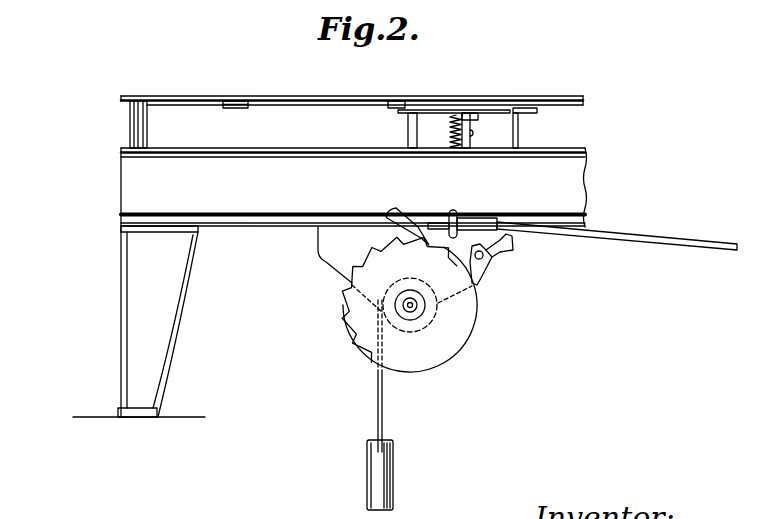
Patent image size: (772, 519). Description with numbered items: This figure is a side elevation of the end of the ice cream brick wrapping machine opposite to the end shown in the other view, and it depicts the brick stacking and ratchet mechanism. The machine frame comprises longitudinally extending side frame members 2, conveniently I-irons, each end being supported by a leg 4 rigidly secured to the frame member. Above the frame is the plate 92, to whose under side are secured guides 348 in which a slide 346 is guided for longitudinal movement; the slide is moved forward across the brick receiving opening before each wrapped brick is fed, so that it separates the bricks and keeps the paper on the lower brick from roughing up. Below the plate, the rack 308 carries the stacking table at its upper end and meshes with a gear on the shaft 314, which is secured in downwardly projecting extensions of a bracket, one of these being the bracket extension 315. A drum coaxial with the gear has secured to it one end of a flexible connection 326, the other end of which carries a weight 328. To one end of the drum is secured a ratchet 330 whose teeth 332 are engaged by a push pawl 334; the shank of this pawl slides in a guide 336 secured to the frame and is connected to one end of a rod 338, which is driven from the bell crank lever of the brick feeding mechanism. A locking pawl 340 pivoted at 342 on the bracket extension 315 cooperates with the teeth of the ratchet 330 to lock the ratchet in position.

The side frame member 2 is at (128, 187).
The leg 4 is at (122, 356).
The plate 92 is at (302, 100).
The rack 308 is at (449, 117).
The shaft 314 is at (413, 306).
The bracket extension 315 is at (335, 265).
The flexible connection 326 is at (384, 415).
The weight 328 is at (394, 465).
The ratchet 330 is at (448, 357).
The ratchet teeth 332 is at (352, 332).
The push pawl 334 is at (425, 222).
The guide 336 is at (458, 211).
The rod 338 is at (673, 243).
The locking pawl 340 is at (514, 253).
The pivot 342 is at (486, 258).
The slide 346 is at (320, 106).
The guide 348 is at (233, 109).